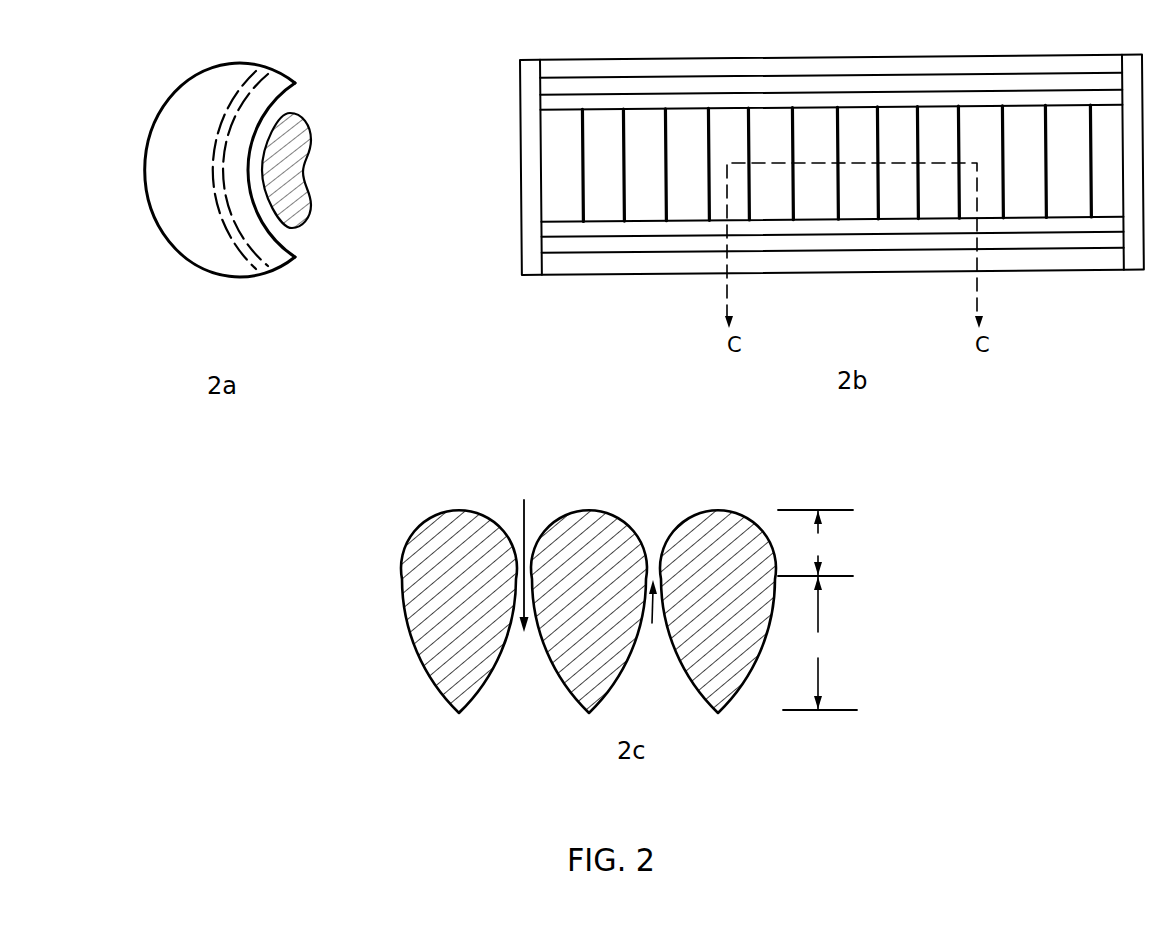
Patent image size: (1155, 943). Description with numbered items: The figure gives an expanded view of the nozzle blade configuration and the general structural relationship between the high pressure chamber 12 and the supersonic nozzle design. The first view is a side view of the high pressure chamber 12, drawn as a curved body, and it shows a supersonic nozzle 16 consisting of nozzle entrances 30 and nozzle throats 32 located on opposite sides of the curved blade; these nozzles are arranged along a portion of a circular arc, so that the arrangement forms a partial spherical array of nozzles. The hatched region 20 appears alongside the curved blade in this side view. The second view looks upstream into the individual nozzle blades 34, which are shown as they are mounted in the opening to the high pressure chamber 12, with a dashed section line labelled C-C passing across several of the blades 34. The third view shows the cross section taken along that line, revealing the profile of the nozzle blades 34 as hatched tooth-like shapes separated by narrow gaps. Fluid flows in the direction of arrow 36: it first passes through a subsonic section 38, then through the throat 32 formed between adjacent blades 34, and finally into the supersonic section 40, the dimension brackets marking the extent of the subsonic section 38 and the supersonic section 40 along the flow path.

In FIG. 2A, the high pressure chamber 12 is at (185, 197).
In FIG. 2A, the supersonic nozzle 16 is at (270, 270).
In FIG. 2A, the cross-section of workpiece 20 is at (296, 196).
In FIG. 2A, the nozzle entrances 30 is at (263, 72).
In FIG. 2A, the nozzle throats 32 is at (274, 80).
In FIG. 2C, the nozzle throats 32 is at (648, 615).
In FIG. 2B, the nozzle blades 34 is at (621, 203).
In FIG. 2C, the nozzle blades 34 is at (587, 613).
In FIG. 2C, the arrow 36 is at (522, 504).
In FIG. 2C, the subsonic section 38 is at (815, 543).
In FIG. 2C, the supersonic section 40 is at (820, 643).